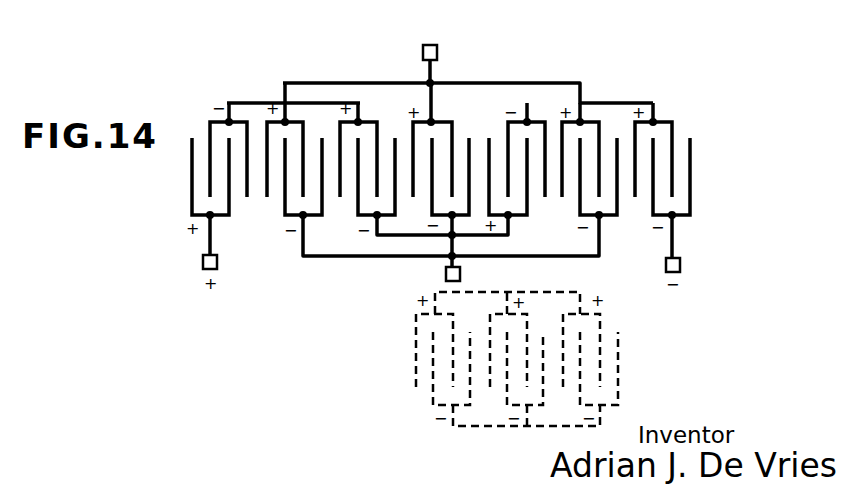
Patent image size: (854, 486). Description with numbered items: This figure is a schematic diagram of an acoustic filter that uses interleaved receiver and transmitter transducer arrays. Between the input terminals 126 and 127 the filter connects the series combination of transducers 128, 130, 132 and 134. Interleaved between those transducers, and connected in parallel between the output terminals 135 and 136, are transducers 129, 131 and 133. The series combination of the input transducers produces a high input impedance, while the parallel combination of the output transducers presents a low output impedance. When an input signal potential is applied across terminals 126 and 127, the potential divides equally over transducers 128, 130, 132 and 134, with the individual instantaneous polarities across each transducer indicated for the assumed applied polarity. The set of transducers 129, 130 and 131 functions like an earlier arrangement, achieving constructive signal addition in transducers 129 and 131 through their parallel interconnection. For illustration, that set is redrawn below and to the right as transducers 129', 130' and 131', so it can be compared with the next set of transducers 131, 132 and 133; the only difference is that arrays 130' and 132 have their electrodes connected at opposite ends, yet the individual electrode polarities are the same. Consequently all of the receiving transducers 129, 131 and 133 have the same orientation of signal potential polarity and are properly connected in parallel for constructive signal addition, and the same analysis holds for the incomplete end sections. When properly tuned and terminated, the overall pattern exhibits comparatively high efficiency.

The input terminal 126 is at (202, 260).
The input terminal 127 is at (680, 265).
The transducer 128 is at (188, 213).
The transducer 129 is at (306, 238).
The transducer 130 is at (354, 184).
The transducer 131 is at (417, 204).
The transducer 132 is at (531, 208).
The transducer 133 is at (613, 225).
The transducer 134 is at (702, 210).
The output terminal 135 is at (460, 273).
The output terminal 136 is at (430, 43).
The transducer 129' is at (412, 365).
The transducer 130' is at (503, 392).
The transducer 131' is at (630, 359).